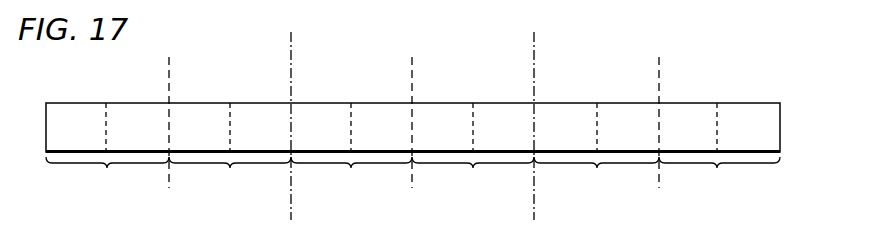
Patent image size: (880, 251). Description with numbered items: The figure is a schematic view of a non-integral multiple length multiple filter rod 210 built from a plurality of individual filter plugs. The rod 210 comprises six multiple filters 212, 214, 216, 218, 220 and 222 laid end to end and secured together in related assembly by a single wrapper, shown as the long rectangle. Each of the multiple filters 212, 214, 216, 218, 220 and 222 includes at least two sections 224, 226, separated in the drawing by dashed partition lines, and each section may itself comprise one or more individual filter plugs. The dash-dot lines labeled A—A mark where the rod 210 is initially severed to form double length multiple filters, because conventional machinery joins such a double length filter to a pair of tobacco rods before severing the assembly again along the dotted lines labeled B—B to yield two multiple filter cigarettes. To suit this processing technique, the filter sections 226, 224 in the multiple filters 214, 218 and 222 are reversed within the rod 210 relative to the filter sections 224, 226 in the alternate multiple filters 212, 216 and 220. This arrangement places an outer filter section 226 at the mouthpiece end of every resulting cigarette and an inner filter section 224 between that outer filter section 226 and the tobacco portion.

The multiple length multiple filter rod 210 is at (745, 34).
The multiple filter 212 is at (107, 175).
The multiple filter 214 is at (230, 175).
The multiple filter 216 is at (351, 175).
The multiple filter 218 is at (473, 175).
The multiple filter 220 is at (596, 175).
The multiple filter 222 is at (719, 175).
The inner filter section 224 is at (71, 113).
The outer filter section 226 is at (132, 113).